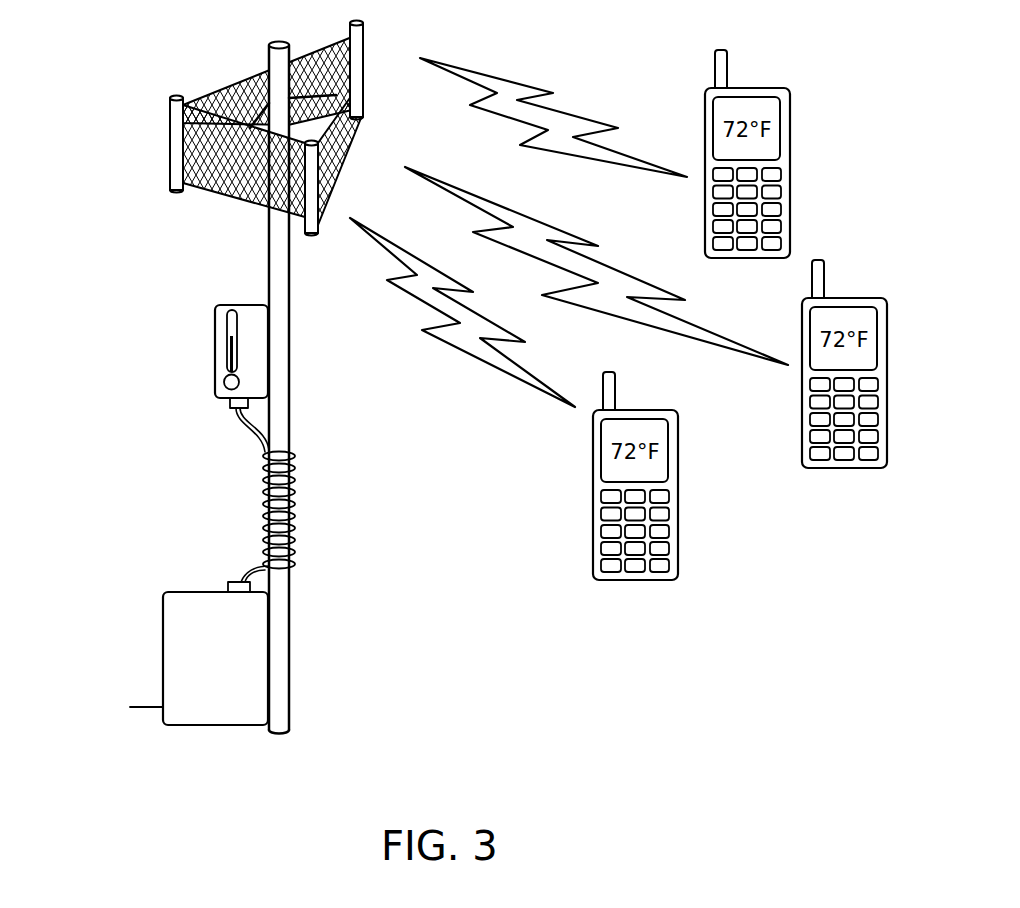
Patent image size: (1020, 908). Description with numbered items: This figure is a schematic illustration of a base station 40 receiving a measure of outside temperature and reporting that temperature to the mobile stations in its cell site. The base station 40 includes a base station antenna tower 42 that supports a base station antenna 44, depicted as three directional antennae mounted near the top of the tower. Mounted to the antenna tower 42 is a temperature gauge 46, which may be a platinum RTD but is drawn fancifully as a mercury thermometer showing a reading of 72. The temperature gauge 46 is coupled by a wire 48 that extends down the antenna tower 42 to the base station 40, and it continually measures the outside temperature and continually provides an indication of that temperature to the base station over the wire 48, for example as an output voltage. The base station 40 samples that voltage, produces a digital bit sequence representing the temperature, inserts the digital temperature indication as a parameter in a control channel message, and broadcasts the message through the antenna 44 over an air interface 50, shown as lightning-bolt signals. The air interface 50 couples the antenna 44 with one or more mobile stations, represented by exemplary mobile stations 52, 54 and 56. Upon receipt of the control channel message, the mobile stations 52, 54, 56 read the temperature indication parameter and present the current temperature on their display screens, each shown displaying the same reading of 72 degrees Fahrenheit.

The base station 40 is at (163, 615).
The base station antenna tower 42 is at (289, 268).
The base station antenna 44 is at (170, 147).
The temperature gauge 46 is at (213, 356).
The wire 48 is at (295, 487).
The air interface 50 is at (533, 83).
The mobile station 52 is at (792, 133).
The mobile station 54 is at (870, 298).
The mobile station 56 is at (677, 455).
The temperature reading 72 is at (251, 339).